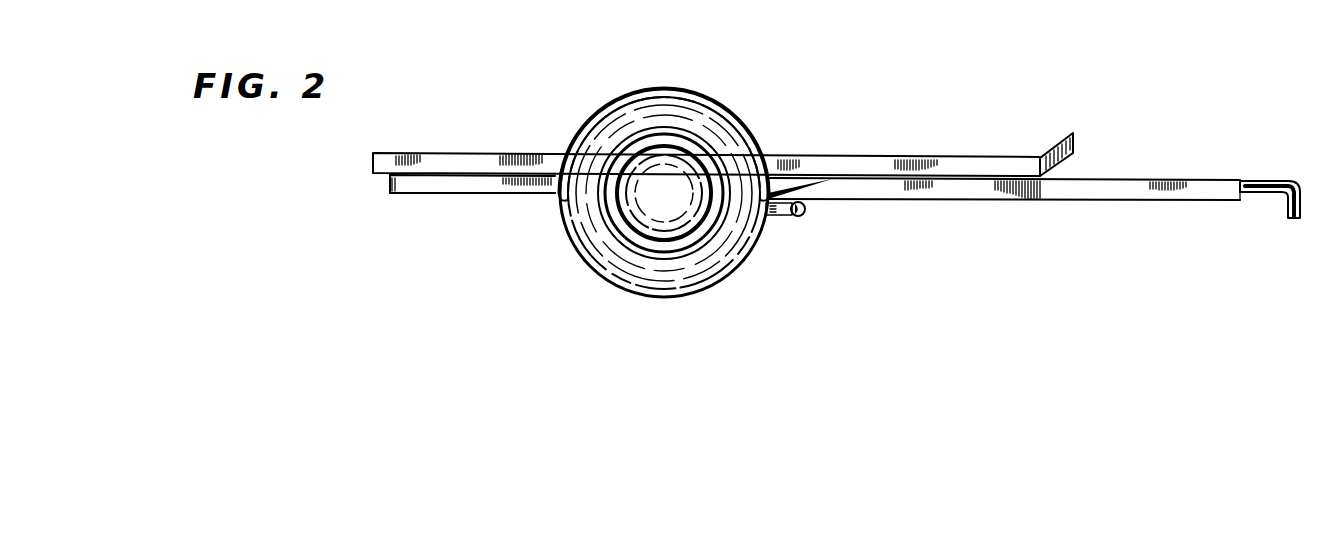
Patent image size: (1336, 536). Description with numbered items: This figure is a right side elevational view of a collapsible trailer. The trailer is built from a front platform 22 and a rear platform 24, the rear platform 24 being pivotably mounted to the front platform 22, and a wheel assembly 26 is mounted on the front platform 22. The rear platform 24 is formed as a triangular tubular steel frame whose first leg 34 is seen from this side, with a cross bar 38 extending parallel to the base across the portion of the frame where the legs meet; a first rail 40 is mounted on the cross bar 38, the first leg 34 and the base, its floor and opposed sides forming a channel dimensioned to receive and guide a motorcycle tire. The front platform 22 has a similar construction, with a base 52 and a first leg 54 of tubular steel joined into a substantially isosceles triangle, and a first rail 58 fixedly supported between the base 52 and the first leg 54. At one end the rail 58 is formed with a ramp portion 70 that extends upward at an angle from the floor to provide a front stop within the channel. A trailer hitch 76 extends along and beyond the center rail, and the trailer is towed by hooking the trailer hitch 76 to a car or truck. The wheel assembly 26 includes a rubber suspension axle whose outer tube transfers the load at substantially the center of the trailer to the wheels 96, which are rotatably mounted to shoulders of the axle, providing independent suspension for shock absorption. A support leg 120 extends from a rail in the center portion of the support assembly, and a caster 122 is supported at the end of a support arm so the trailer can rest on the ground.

The front platform 22 is at (1219, 172).
The rear platform 24 is at (471, 216).
The wheel assembly 26 is at (741, 99).
The first leg 34 is at (524, 187).
The cross bar 38 is at (390, 194).
The first rail 40 is at (372, 162).
The base 52 is at (1028, 200).
The first leg 54 is at (937, 184).
The first rail 58 is at (932, 158).
The ramp portion 70 is at (1075, 138).
The trailer hitch 76 is at (1301, 180).
The wheel 96 is at (723, 243).
The support leg 120 is at (770, 209).
The caster 122 is at (806, 209).